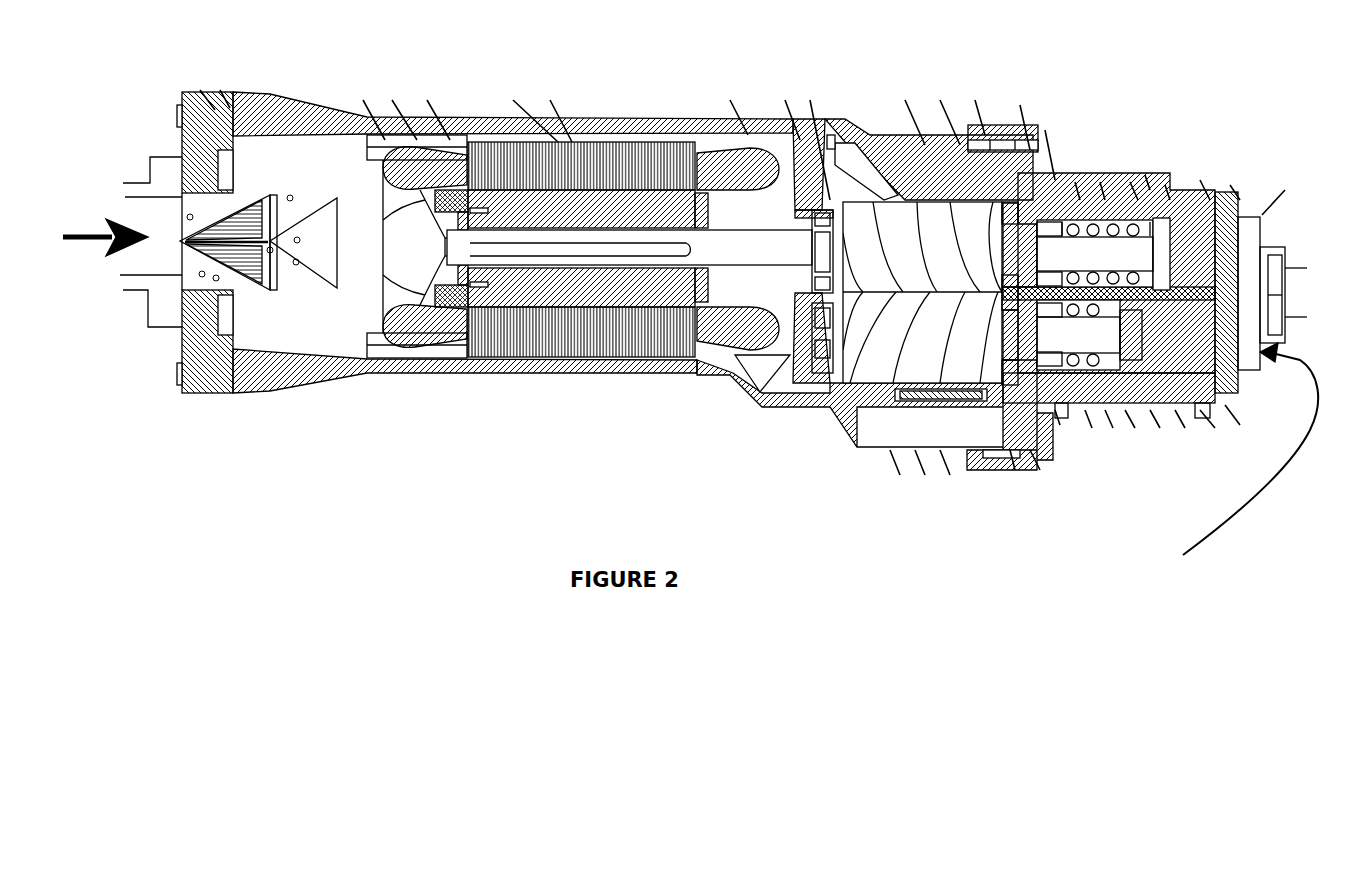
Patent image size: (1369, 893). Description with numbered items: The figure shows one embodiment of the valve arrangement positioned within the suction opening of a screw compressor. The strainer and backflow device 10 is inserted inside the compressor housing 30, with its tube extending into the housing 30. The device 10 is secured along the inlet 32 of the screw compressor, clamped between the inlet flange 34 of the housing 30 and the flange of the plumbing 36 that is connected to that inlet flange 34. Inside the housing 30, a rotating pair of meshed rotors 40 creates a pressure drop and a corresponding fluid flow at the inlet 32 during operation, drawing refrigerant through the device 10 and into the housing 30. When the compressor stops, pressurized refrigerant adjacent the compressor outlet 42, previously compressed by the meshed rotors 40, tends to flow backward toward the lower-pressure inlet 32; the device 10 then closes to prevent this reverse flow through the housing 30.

The strainer and backflow device 10 is at (270, 190).
The compressor housing 30 is at (602, 118).
The inlet 32 is at (118, 264).
The inlet flange 34 is at (177, 147).
The plumbing 36 is at (160, 313).
The pair of meshed rotors 40 is at (887, 200).
The compressor outlet 42 is at (1277, 300).